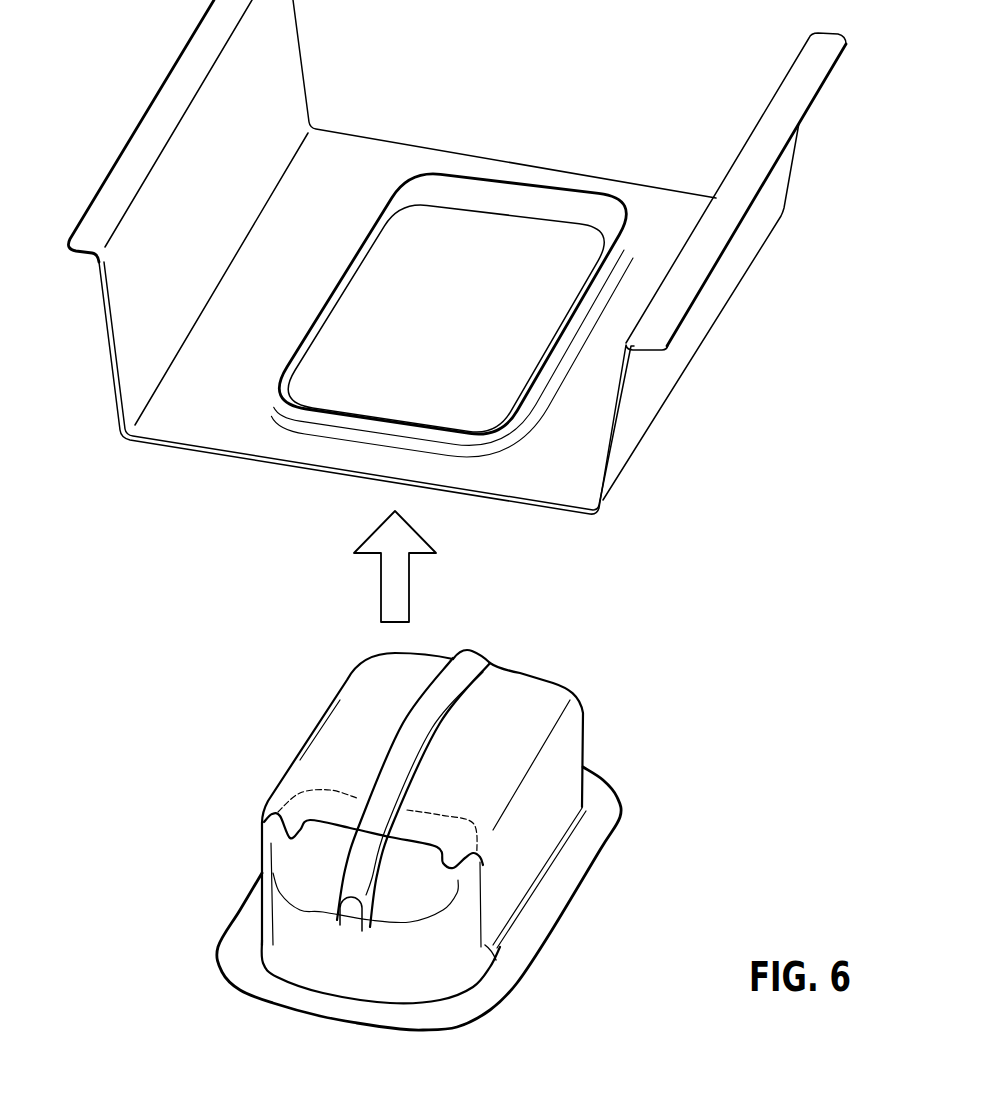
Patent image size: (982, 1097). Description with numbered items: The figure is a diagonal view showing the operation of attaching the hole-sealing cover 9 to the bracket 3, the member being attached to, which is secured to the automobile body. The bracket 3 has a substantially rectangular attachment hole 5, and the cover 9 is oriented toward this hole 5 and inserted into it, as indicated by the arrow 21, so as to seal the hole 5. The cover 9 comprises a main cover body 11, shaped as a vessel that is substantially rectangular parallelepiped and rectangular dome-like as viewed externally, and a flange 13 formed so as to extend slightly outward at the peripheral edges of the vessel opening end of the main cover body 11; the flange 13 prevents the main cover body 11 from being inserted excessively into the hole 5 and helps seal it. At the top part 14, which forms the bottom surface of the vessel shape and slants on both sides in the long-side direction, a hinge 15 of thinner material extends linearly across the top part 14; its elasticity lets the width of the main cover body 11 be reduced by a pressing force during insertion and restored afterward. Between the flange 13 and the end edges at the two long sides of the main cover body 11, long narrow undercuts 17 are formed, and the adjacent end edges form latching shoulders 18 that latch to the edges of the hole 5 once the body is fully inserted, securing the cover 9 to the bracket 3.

The bracket 3 is at (643, 407).
The attachment hole 5 is at (445, 200).
The hole-sealing cover 9 is at (434, 820).
The main cover body 11 is at (297, 763).
The flange 13 is at (557, 888).
The top part 14 is at (367, 710).
The hinge 15 is at (466, 660).
The undercut 17 is at (492, 958).
The latching shoulder 18 is at (487, 958).
The arrow 21 is at (381, 590).